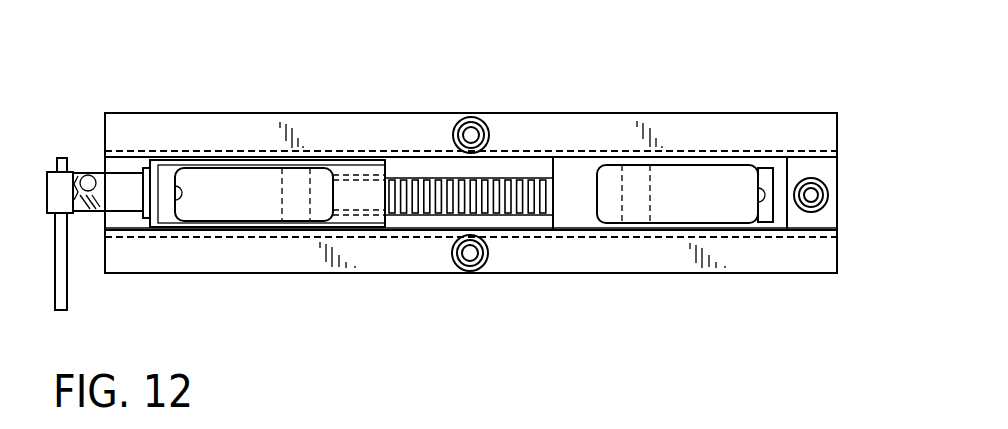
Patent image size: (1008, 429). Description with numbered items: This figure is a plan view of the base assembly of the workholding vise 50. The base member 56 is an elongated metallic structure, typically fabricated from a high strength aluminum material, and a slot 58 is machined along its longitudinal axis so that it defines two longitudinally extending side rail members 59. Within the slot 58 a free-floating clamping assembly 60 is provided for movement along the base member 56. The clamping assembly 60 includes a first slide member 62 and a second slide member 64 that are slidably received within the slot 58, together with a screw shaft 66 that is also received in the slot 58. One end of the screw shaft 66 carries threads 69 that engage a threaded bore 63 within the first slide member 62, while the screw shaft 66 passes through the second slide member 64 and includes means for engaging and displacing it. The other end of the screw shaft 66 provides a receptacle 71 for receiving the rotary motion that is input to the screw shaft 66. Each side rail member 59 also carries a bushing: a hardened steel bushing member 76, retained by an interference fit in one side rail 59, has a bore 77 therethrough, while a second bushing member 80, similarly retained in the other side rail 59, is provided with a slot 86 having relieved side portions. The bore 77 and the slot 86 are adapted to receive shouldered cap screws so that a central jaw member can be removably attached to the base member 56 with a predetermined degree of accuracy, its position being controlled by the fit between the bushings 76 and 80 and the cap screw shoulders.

The workholding vise 50 is at (768, 109).
The base member 56 is at (713, 280).
The slot 58 is at (505, 160).
The side rail members 59 is at (252, 144).
The clamping assembly 60 is at (425, 232).
The first slide member 62 is at (255, 205).
The threaded bore 63 is at (368, 165).
The second slide member 64 is at (718, 208).
The screw shaft 66 is at (128, 181).
The threads 69 is at (435, 178).
The receptacle 71 is at (75, 172).
The bushing member 76 is at (487, 248).
The bore 77 is at (480, 273).
The second bushing member 80 is at (485, 122).
The slot 86 is at (471, 132).